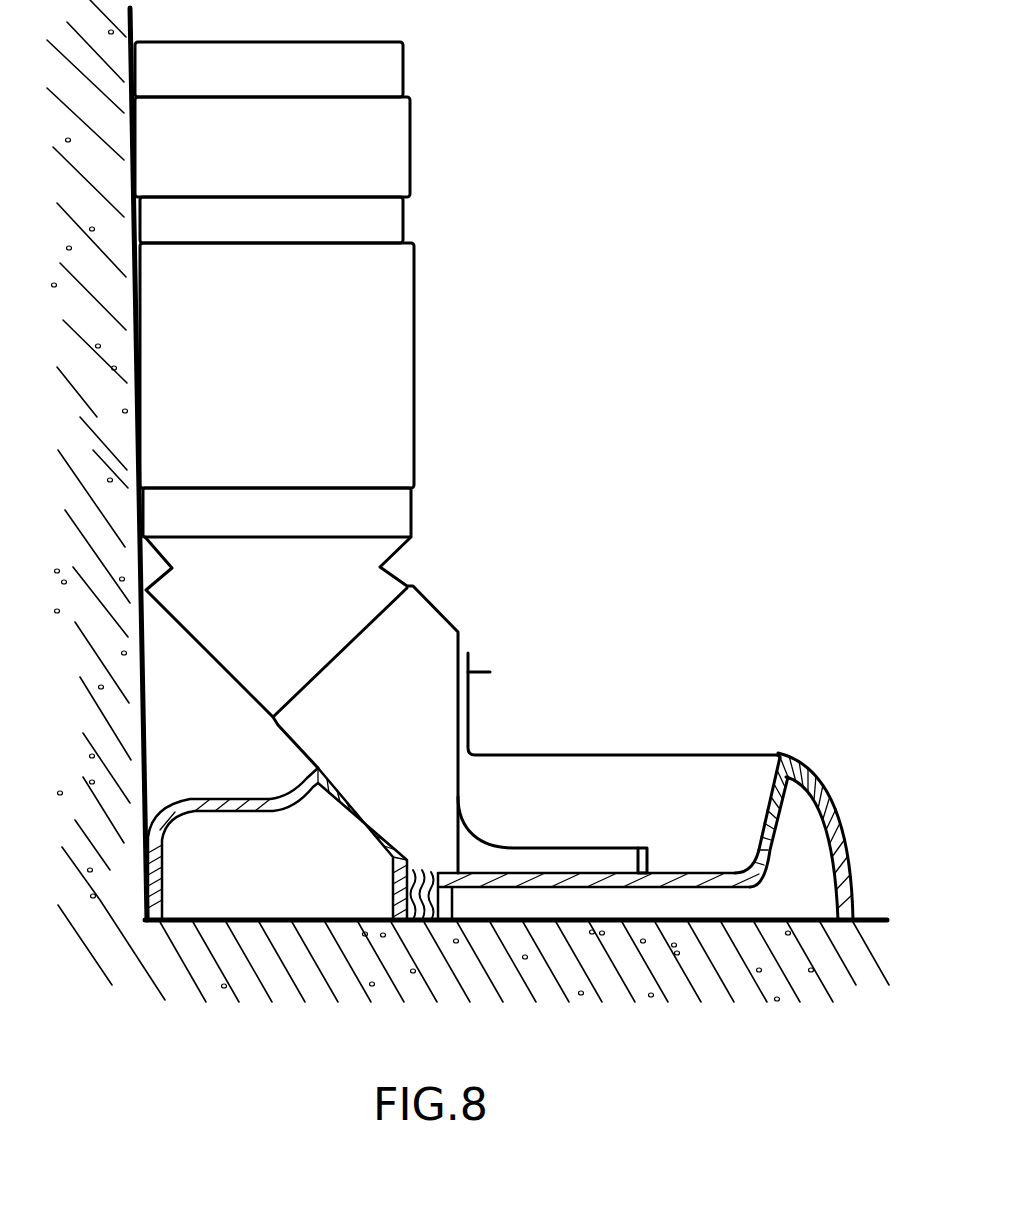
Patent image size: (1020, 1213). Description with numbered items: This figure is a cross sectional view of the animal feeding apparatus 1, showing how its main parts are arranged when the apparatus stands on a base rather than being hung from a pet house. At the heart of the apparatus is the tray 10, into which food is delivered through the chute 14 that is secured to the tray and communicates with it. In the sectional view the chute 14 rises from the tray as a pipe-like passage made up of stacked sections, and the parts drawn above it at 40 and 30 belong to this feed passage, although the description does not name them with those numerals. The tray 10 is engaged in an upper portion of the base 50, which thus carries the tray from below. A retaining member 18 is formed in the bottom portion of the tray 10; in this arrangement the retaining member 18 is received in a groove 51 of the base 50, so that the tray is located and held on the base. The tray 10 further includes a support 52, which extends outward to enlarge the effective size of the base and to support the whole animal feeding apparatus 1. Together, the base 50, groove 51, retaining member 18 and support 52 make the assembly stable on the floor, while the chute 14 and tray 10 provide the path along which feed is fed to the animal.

The animal feeding apparatus 1 is at (500, 540).
The pipe section 40 is at (388, 368).
The pipe coupling 30 is at (382, 517).
The chute 14 is at (413, 643).
The tray 10 is at (733, 783).
The base 50 is at (833, 827).
The groove 51 is at (494, 922).
The support 52 is at (140, 905).
The retaining member 18 is at (422, 922).